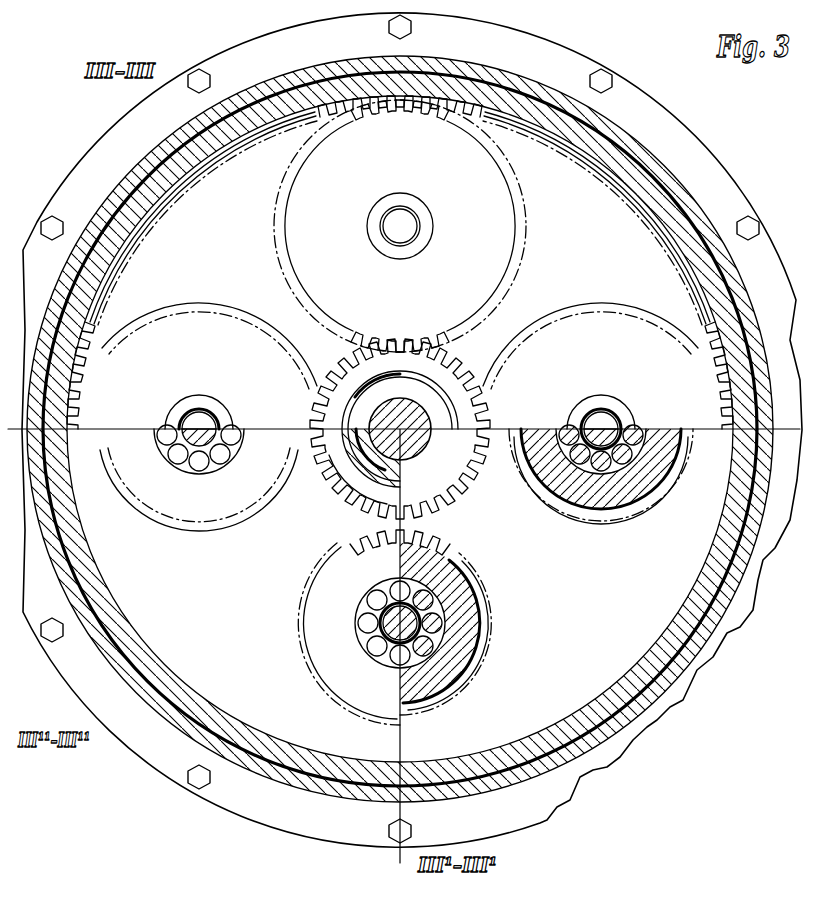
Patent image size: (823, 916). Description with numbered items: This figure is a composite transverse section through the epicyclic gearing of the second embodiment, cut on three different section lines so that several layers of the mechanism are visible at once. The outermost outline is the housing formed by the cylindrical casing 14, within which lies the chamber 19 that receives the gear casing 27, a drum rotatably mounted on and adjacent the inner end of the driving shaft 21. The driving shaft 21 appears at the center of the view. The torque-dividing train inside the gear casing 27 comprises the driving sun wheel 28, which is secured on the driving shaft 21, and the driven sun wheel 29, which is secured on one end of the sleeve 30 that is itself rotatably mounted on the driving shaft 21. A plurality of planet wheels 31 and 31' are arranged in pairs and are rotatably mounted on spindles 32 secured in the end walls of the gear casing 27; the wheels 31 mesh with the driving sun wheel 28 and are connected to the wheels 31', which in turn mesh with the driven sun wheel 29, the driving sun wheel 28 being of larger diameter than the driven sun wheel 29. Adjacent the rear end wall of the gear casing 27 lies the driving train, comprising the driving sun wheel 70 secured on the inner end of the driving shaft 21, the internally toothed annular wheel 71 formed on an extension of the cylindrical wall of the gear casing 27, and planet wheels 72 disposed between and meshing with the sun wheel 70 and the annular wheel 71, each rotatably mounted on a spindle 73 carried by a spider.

The cylindrical casing 14 is at (657, 172).
The chamber 19 is at (197, 222).
The driving shaft 21 is at (405, 425).
The gear casing 27 is at (295, 760).
The driving sun wheel 28 is at (470, 488).
The driven sun wheel 29 is at (330, 492).
The sleeve 30 is at (357, 482).
The planet wheel 31 is at (458, 577).
The planet wheel 31' is at (199, 511).
The spindle 32 is at (215, 450).
The driving sun wheel 70 is at (363, 388).
The annular wheel 71 is at (313, 115).
The planet wheel 72 is at (492, 250).
The spindle 73 is at (196, 418).